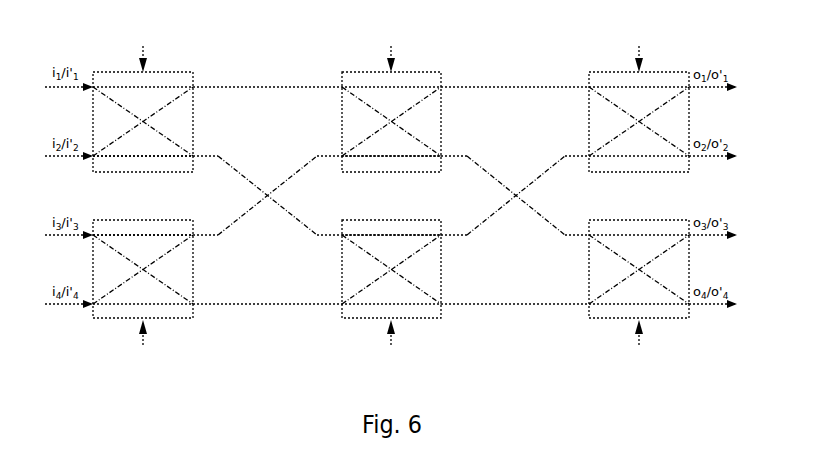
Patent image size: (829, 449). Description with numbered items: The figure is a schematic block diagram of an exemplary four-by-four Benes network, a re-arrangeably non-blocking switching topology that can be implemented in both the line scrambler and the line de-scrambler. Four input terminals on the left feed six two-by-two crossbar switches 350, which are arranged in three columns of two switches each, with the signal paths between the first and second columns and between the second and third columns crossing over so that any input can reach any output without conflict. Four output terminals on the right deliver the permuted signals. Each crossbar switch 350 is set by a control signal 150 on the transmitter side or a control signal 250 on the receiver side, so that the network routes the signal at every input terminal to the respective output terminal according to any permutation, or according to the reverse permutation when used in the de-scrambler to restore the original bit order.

The 2×2 crossbar switch 350 is at (391, 195).
The control signal 150 is at (390, 195).
The control signal 250 is at (390, 195).